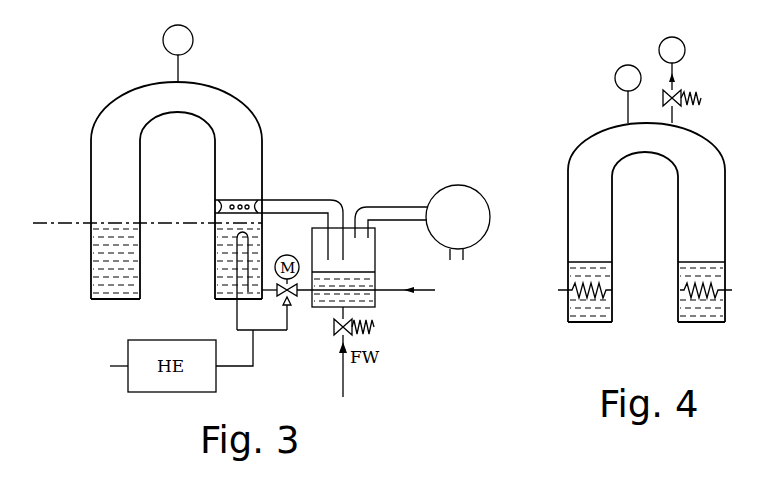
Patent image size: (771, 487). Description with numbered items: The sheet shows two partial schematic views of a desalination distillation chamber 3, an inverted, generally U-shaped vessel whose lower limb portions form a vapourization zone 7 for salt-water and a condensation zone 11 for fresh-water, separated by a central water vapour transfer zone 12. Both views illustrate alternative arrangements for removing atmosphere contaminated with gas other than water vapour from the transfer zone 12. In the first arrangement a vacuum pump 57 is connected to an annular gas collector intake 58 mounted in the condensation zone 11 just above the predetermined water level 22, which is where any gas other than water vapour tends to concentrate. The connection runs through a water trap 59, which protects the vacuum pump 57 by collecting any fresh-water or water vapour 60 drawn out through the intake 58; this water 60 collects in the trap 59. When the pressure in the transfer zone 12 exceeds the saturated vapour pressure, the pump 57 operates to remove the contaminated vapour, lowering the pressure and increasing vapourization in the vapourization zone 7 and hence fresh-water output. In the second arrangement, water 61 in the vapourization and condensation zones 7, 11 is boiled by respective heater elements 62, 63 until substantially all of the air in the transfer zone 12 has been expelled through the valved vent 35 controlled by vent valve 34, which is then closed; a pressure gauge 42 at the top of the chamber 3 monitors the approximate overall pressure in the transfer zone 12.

In FIG. 3, the water vapour transfer zone 12 is at (219, 94).
In FIG. 4, the water vapour transfer zone 12 is at (707, 160).
In FIG. 3, the predetermined water level 22 is at (70, 222).
In FIG. 3, the condensation zone 11 is at (222, 228).
In FIG. 4, the condensation zone 11 is at (690, 262).
In FIG. 3, the annular gas collector intake 58 is at (252, 200).
In FIG. 3, the vacuum pump 57 is at (463, 186).
In FIG. 3, the water trap 59 is at (313, 312).
In FIG. 3, the fresh-water or water vapour 60 is at (376, 303).
In FIG. 4, the chamber 3 is at (706, 141).
In FIG. 4, the pressure gauge 42 is at (615, 78).
In FIG. 4, the vent 35 is at (685, 49).
In FIG. 4, the vent valve 34 is at (697, 93).
In FIG. 4, the vapourization zone 7 is at (600, 262).
In FIG. 4, the heater element 62 is at (588, 293).
In FIG. 4, the heater element 63 is at (705, 293).
In FIG. 4, the water 61 is at (680, 313).